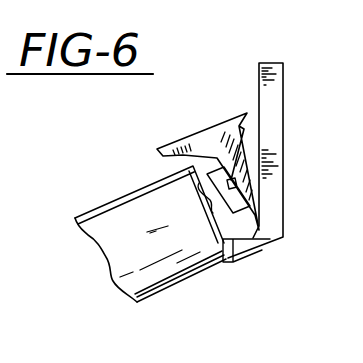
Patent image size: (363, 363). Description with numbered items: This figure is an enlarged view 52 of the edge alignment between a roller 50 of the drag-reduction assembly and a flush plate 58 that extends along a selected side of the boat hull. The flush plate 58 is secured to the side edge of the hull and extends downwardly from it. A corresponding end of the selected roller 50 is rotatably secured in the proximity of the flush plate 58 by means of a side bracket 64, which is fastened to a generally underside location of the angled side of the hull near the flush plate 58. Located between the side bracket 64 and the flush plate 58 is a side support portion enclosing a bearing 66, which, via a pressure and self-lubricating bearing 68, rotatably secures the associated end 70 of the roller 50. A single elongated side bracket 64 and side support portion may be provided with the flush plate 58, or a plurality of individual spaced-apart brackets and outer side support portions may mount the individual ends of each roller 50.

The roller 50 is at (183, 273).
The enlarged view 52 is at (197, 86).
The flush plate 58 is at (283, 135).
The side bracket 64 is at (203, 133).
The bearing 66 is at (207, 175).
The pressure and self-lubricating bearing 68 is at (167, 229).
The end of the roller 70 is at (233, 256).